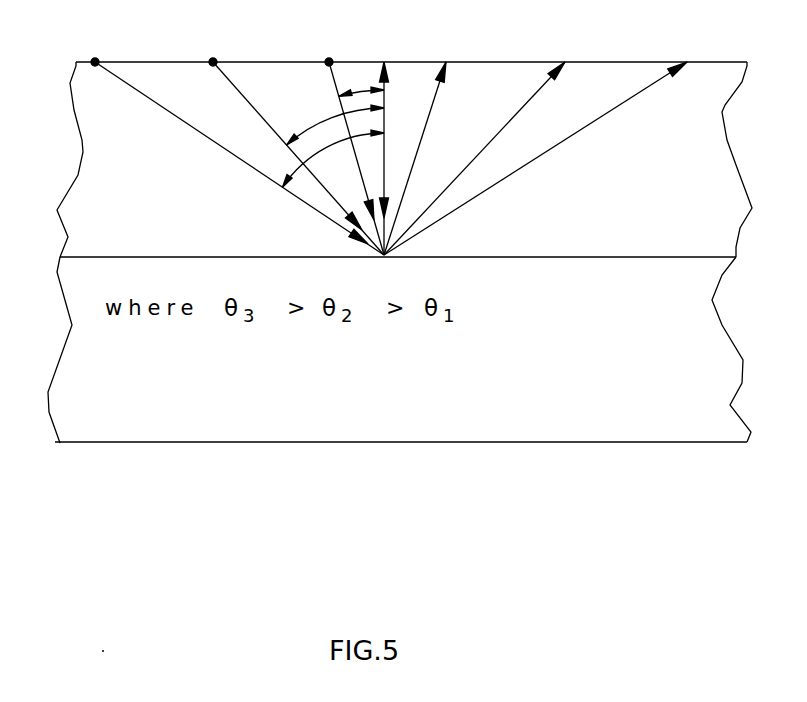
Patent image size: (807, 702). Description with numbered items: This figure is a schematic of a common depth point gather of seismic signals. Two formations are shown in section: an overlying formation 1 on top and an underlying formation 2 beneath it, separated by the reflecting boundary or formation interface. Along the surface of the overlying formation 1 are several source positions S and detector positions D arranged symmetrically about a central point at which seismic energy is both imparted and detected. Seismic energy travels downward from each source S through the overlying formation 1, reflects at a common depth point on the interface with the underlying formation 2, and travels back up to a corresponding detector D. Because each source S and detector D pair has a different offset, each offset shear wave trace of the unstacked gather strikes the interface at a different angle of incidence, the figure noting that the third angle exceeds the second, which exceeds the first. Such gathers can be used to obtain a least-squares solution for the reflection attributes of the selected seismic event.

The overlying formation 1 is at (70, 83).
The underlying formation 2 is at (72, 325).
The seismic source S is at (236, 143).
The seismic detector D is at (541, 143).